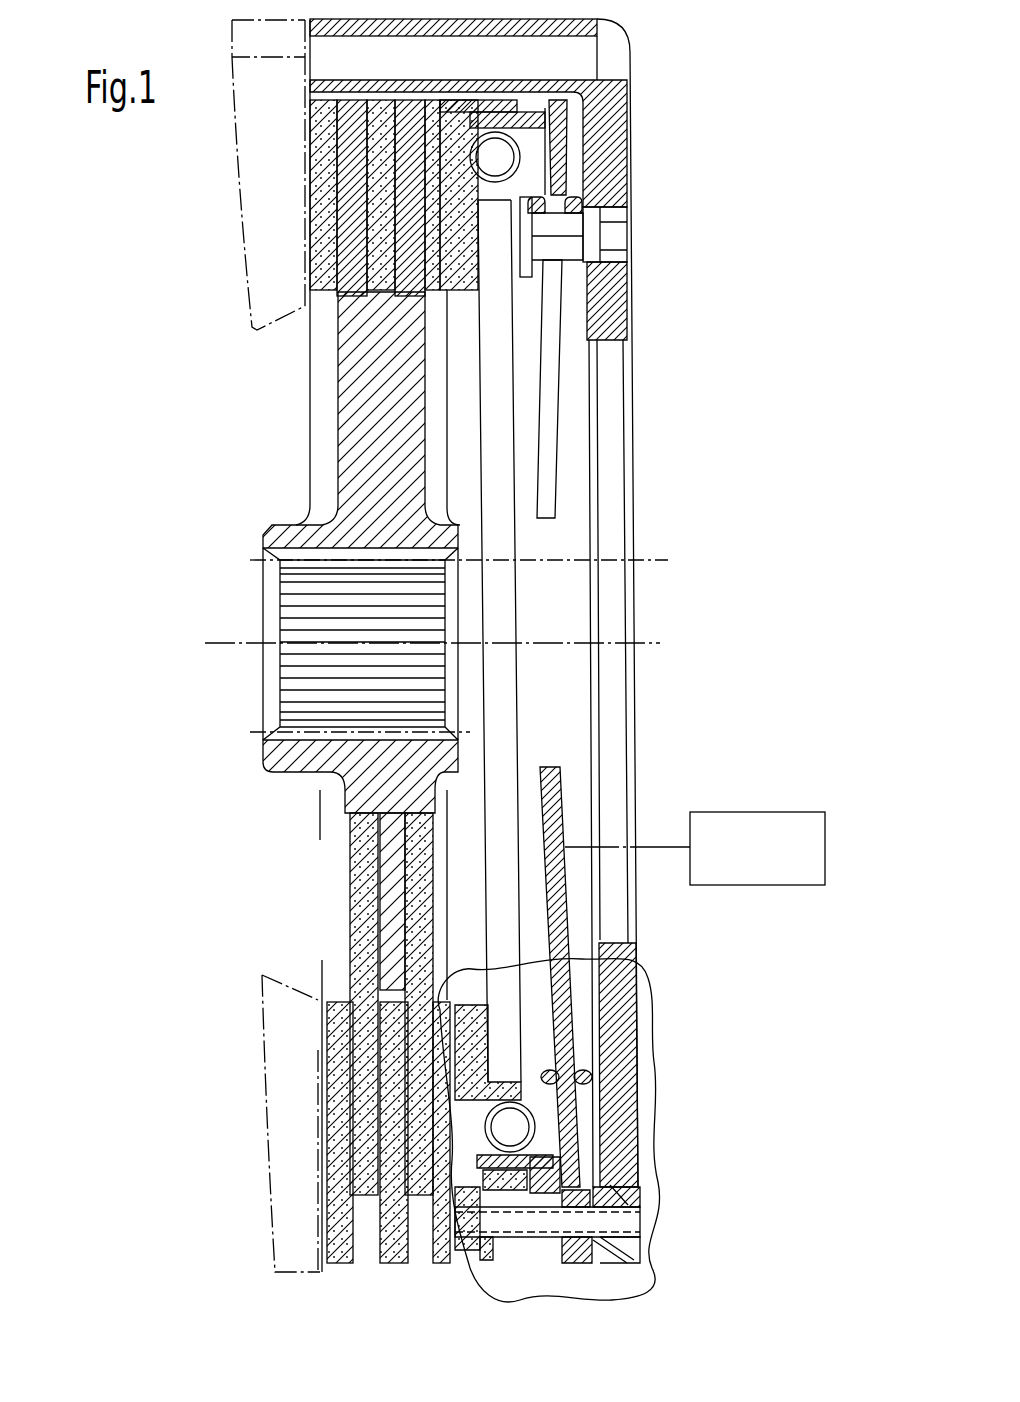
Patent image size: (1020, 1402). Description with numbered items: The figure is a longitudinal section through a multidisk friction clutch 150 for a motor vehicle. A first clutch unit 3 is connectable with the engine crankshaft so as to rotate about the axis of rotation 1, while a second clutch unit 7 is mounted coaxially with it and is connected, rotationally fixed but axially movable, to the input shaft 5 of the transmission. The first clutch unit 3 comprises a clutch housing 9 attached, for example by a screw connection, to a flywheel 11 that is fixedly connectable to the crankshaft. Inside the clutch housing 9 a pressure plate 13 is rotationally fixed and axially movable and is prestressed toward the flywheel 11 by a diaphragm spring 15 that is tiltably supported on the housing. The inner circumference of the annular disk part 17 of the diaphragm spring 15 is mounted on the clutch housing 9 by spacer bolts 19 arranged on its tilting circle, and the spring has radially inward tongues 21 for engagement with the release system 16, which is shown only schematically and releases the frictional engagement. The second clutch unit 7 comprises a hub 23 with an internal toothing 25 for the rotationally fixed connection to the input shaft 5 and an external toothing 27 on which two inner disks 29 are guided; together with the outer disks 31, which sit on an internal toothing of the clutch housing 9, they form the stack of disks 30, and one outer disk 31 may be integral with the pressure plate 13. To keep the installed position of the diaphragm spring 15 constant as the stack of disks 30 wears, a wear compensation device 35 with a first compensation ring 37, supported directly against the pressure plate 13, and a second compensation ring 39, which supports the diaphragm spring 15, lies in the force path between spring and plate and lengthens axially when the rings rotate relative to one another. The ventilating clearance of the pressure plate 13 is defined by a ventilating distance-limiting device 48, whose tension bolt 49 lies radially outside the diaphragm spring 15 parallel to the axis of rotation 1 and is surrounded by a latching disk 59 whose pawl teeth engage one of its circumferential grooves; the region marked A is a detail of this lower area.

The axis of rotation 1 is at (660, 643).
The first clutch unit 3 is at (652, 1272).
The input shaft 5 is at (467, 640).
The second clutch unit 7 is at (257, 775).
The clutch housing 9 is at (629, 172).
The flywheel 11 is at (262, 330).
The pressure plate 13 is at (493, 1012).
The diaphragm spring 15 is at (530, 325).
The release system 16 is at (728, 812).
The annular disk part 17 is at (557, 143).
The spacer bolts 19 is at (533, 248).
The tongues 21 is at (548, 467).
The hub 23 is at (290, 530).
The internal toothing 25 is at (297, 563).
The external toothing 27 is at (348, 813).
The inner disks 29 is at (410, 905).
The stack of disks 30 is at (245, 900).
The outer disks 31 is at (383, 978).
The wear compensation device 35 is at (530, 1086).
The first compensation ring 37 is at (465, 1257).
The second compensation ring 39 is at (583, 1137).
The ventilating distance-limiting device 48 is at (627, 1190).
The tension bolt 49 is at (527, 1258).
The latching disk 59 is at (640, 1250).
The multidisk friction clutch 150 is at (660, 364).
The detail region A is at (663, 1073).